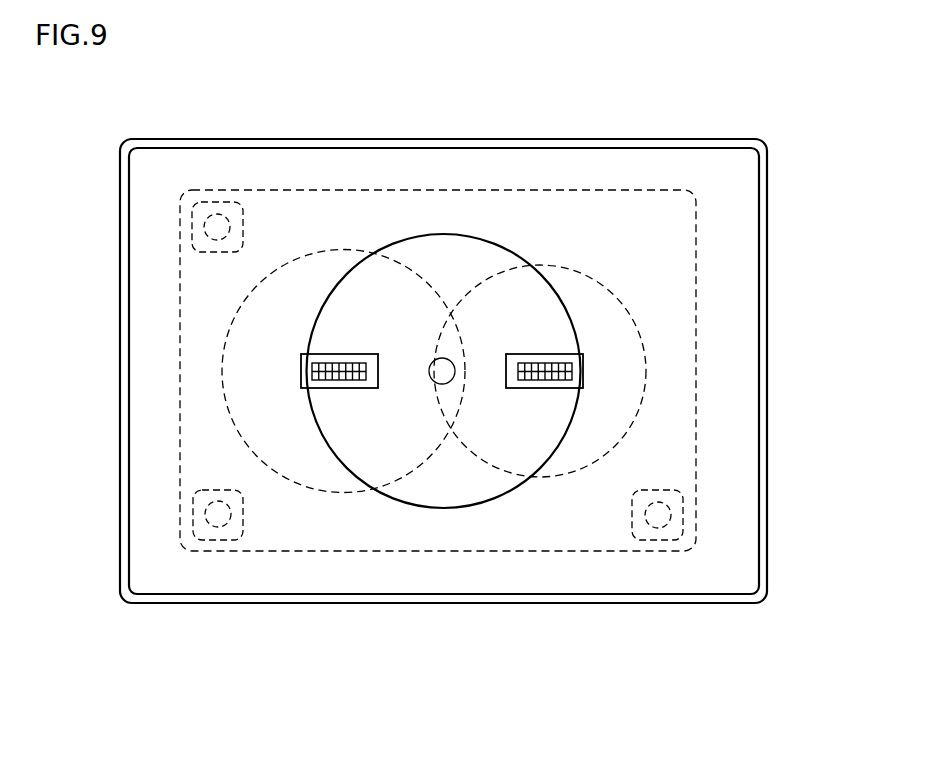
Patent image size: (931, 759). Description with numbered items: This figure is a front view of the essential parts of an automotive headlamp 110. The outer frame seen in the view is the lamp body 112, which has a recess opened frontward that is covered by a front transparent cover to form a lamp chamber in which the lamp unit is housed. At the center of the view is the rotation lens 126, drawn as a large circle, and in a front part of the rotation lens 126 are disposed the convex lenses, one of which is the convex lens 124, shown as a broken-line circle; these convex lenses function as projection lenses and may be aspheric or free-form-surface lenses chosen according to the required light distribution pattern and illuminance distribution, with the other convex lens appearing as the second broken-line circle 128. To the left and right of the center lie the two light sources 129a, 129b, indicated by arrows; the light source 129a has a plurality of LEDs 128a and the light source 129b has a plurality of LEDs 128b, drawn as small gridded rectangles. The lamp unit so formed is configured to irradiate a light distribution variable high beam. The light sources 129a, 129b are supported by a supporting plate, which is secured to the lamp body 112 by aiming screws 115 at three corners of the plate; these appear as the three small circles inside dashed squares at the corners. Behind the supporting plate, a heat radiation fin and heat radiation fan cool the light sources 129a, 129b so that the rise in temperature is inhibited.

The automotive headlamp 110 is at (467, 729).
The lamp body 112 is at (768, 347).
The aiming screws 115 is at (204, 227).
The convex lens 124 is at (580, 470).
The rotation lens 126 is at (443, 234).
The first guide region 128 is at (328, 492).
The LEDs 128a is at (323, 363).
The LEDs 128b is at (563, 363).
The light source 129a is at (290, 370).
The light source 129b is at (598, 369).